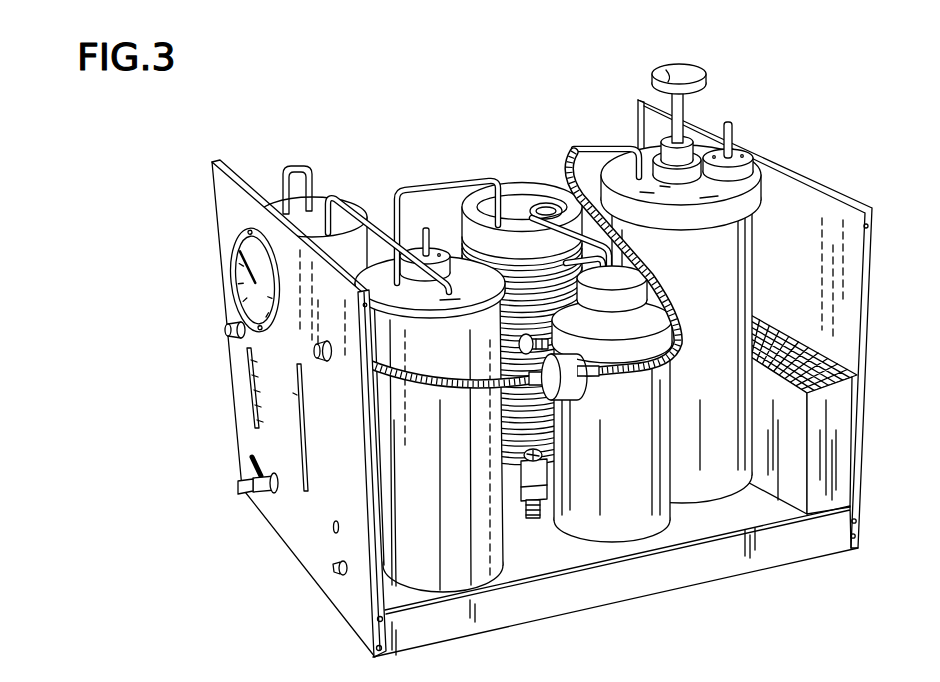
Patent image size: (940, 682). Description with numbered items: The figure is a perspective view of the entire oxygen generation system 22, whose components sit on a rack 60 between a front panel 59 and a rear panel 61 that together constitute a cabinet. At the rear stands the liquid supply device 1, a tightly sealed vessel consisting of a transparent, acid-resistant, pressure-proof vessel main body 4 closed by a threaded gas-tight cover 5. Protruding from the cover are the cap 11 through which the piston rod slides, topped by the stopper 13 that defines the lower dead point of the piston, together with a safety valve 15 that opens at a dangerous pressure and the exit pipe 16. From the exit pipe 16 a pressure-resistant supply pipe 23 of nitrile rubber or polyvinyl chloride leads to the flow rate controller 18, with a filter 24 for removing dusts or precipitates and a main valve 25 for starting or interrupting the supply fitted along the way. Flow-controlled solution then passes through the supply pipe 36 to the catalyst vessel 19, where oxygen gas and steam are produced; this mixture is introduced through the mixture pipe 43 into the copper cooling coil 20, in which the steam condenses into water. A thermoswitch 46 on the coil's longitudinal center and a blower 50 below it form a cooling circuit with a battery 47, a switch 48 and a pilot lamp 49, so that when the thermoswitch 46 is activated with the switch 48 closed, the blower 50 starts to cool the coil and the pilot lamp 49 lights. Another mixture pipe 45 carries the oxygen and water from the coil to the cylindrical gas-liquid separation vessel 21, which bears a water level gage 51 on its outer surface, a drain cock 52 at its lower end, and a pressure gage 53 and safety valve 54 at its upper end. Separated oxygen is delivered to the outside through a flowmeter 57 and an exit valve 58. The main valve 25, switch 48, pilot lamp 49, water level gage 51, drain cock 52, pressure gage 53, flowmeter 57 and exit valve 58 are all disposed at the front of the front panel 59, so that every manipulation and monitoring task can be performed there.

The liquid supply device 1 is at (708, 304).
The vessel main body 4 is at (722, 300).
The gas-tight cover 5 is at (760, 212).
The cap 11 is at (698, 150).
The stopper 13 is at (663, 72).
The safety valve 15 is at (734, 130).
The exit pipe 16 is at (625, 150).
The flow rate controller 18 is at (278, 198).
The catalyst vessel 19 is at (620, 535).
The cooling coil 20 is at (535, 296).
The gas-liquid separation vessel 21 is at (466, 577).
The oxygen generation system 22 is at (543, 355).
The supply pipe 23 is at (581, 150).
The filter 24 is at (580, 385).
The main valve 25 is at (326, 360).
The supply pipe 36 is at (379, 217).
The mixture pipe 43 is at (557, 205).
The mixture pipe 45 is at (462, 188).
The thermoswitch 46 is at (520, 348).
The battery 47 is at (846, 438).
The switch 48 is at (333, 571).
The pilot lamp 49 is at (332, 525).
The blower 50 is at (542, 474).
The water level gage 51 is at (305, 445).
The drain cock 52 is at (240, 484).
The pressure gage 53 is at (242, 277).
The safety valve 54 is at (427, 228).
The flowmeter 57 is at (246, 384).
The exit valve 58 is at (226, 333).
The front panel 59 is at (218, 210).
The rack 60 is at (722, 568).
The rear panel 61 is at (870, 311).